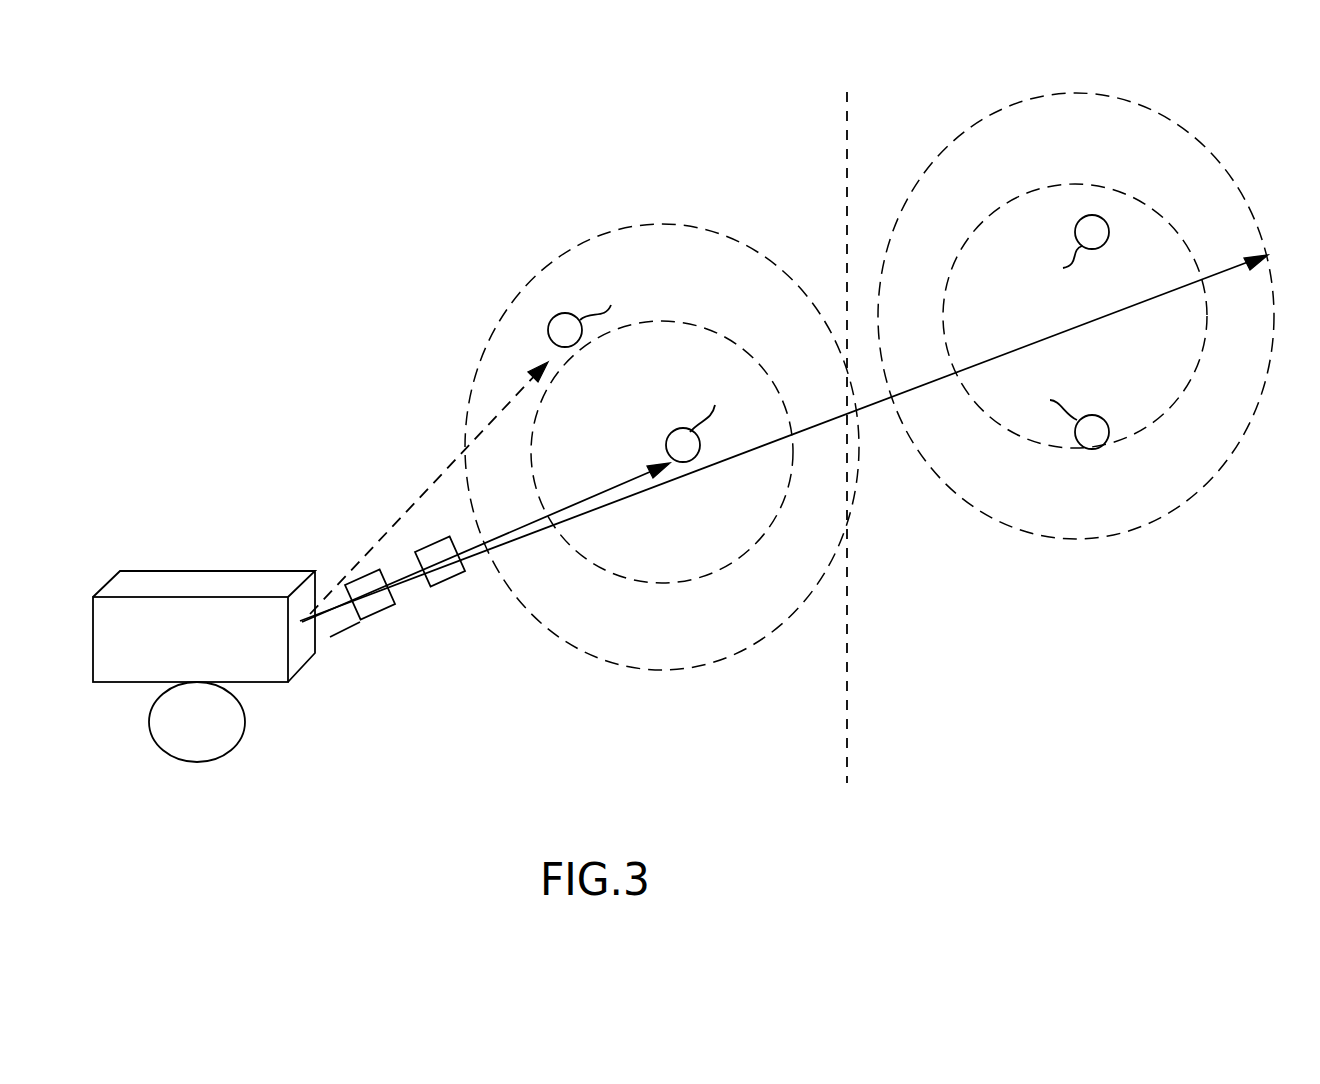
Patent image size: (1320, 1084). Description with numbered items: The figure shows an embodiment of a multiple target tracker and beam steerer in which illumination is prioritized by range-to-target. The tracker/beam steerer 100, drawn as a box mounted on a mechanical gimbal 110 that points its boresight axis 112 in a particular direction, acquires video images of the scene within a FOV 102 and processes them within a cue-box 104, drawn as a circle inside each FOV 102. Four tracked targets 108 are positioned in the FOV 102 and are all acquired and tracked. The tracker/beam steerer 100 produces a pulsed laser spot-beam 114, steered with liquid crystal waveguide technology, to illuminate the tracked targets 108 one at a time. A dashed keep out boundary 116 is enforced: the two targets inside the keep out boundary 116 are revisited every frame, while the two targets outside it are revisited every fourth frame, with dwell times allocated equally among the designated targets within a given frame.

The tracker/beam steerer 100 is at (238, 571).
The FOV 102 is at (687, 672).
The cue-box 104 is at (727, 568).
The tracked targets 108 is at (670, 435).
The mechanical gimbal 110 is at (245, 724).
The boresight axis 112 is at (813, 430).
The pulsed laser spot-beam 114 is at (415, 602).
The keep out boundary 116 is at (847, 720).